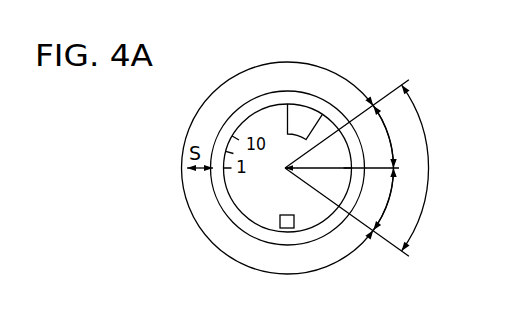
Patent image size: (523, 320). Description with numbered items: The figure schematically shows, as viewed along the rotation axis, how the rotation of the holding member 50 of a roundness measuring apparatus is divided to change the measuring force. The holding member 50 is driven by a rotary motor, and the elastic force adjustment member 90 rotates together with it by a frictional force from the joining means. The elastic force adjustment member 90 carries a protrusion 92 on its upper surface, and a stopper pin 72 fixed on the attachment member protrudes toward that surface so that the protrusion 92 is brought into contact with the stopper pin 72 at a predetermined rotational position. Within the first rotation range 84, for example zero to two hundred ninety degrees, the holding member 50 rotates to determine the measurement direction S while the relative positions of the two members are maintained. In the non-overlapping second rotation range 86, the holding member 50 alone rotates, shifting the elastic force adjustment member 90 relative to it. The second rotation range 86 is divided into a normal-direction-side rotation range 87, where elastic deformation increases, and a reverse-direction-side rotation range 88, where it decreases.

The holding member 50 is at (250, 103).
The stopper pin 72 is at (295, 222).
The first rotation range 84 is at (192, 120).
The second rotation range 86 is at (430, 168).
The normal-direction-side rotation range 87 is at (388, 136).
The reverse-direction-side rotation range 88 is at (388, 202).
The elastic force adjustment member 90 is at (277, 104).
The protrusion 92 is at (303, 115).